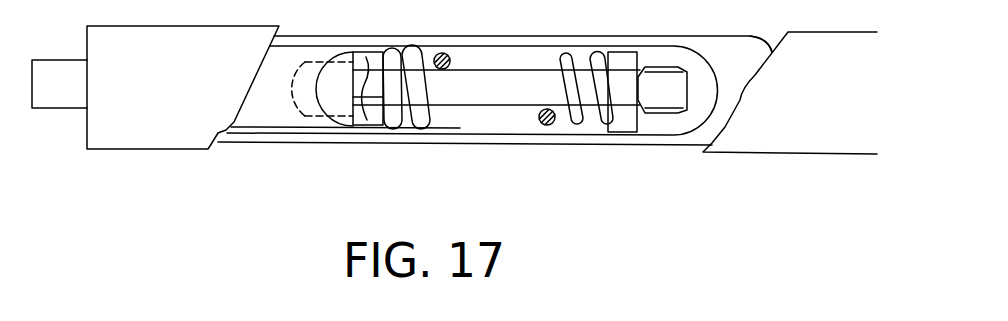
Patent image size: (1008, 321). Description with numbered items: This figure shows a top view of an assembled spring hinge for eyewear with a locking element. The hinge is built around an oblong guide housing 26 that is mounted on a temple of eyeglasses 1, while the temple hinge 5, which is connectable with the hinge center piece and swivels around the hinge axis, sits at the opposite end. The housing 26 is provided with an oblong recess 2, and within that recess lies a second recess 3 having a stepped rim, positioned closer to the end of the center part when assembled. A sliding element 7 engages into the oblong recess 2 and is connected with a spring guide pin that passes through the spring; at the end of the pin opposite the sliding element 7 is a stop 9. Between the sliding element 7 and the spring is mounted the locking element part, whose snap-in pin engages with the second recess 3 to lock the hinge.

The temple of eyeglasses 1 is at (842, 130).
The oblong recess 2 is at (410, 122).
The second recess 3 is at (328, 117).
The temple hinge 5 is at (60, 95).
The sliding element 7 is at (255, 118).
The stop 9 is at (622, 122).
The oblong guide housing 26 is at (732, 75).